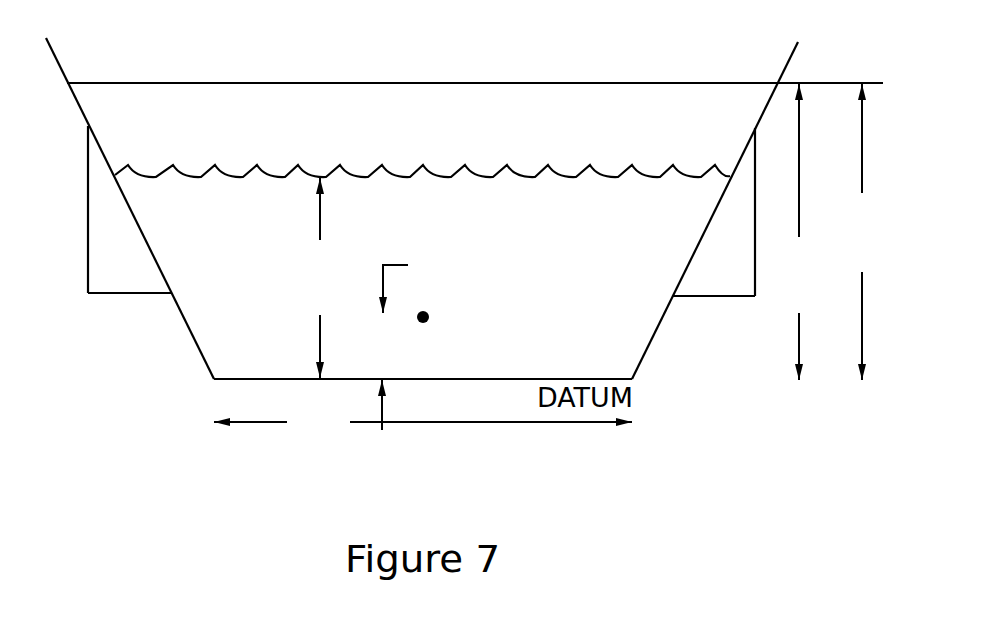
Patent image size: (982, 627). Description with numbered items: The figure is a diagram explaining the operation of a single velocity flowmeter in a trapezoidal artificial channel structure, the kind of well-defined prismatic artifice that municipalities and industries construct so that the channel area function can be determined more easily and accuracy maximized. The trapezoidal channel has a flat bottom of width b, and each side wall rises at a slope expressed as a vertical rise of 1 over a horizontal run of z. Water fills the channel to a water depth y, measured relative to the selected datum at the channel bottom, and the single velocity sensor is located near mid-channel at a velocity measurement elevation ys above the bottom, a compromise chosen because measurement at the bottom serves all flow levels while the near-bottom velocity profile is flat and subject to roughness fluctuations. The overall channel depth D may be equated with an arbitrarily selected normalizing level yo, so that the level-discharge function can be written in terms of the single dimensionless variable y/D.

The unit vertical rise of channel side slope 1 is at (420, 211).
The horizontal run of channel side slope (side slope ratio z:1) z is at (421, 321).
The water depth y is at (318, 278).
The velocity measurement elevation ys is at (421, 287).
The channel bottom width b is at (423, 409).
The normalizing level yo is at (799, 232).
The channel depth D is at (861, 232).